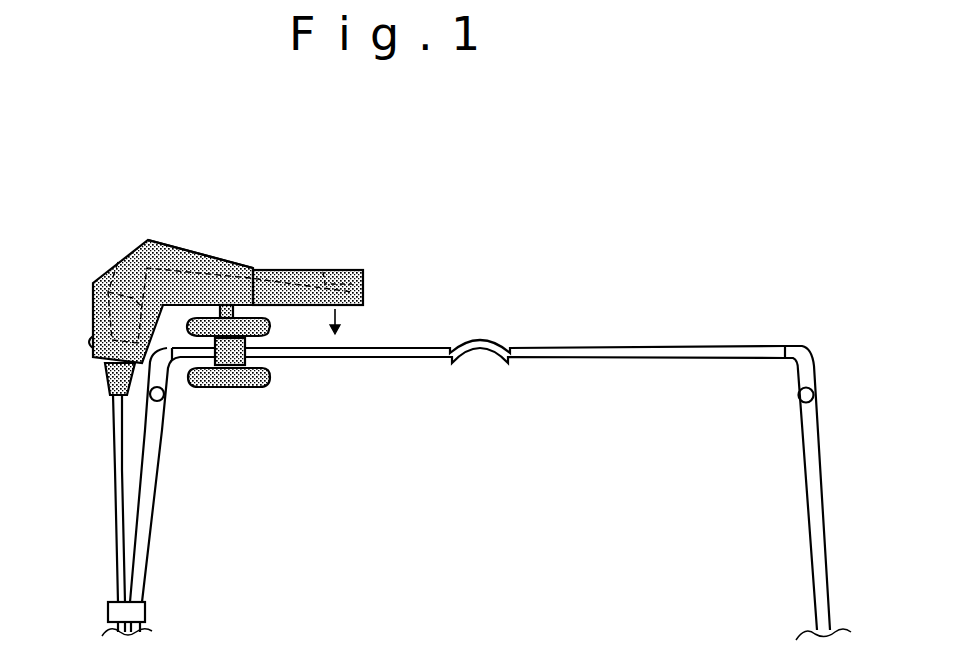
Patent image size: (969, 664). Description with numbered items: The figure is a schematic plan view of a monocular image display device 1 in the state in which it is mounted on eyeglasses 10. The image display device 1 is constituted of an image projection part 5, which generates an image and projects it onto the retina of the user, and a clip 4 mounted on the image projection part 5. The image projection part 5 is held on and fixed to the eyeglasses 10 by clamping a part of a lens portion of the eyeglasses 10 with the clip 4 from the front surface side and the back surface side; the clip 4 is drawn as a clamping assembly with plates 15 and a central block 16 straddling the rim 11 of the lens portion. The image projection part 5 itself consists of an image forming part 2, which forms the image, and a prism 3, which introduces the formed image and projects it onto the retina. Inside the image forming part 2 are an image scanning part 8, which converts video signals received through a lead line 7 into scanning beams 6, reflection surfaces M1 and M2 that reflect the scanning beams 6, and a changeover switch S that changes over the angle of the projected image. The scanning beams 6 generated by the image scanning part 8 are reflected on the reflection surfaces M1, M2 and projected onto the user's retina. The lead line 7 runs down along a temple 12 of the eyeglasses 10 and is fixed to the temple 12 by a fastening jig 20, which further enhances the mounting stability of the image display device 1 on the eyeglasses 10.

The image display device 1 is at (378, 214).
The image forming part 2 is at (203, 257).
The prism 3 is at (297, 270).
The clip 4 is at (210, 437).
The image projection part 5 is at (212, 203).
The scanning beams 6 is at (184, 261).
The lead line 7 is at (112, 425).
The image scanning part 8 is at (92, 307).
The eyeglasses 10 is at (589, 308).
The top rail 11 is at (380, 359).
The temple 12 is at (148, 503).
The clamp plate 15 is at (265, 388).
The spacer block 16 is at (233, 388).
The fastening jig 20 is at (147, 608).
The reflection surface M1 is at (120, 260).
The reflection surface M2 is at (368, 287).
The changeover switch S is at (88, 344).